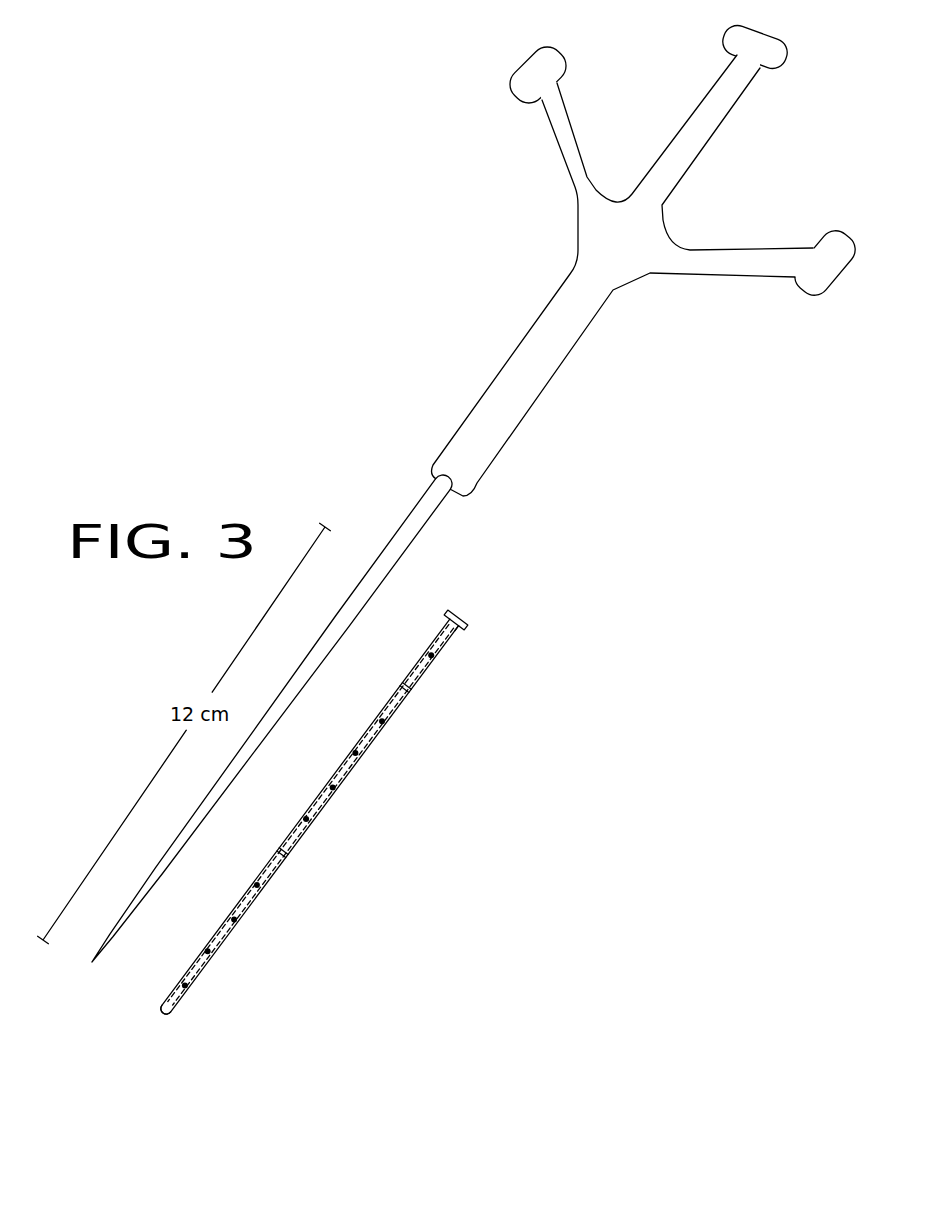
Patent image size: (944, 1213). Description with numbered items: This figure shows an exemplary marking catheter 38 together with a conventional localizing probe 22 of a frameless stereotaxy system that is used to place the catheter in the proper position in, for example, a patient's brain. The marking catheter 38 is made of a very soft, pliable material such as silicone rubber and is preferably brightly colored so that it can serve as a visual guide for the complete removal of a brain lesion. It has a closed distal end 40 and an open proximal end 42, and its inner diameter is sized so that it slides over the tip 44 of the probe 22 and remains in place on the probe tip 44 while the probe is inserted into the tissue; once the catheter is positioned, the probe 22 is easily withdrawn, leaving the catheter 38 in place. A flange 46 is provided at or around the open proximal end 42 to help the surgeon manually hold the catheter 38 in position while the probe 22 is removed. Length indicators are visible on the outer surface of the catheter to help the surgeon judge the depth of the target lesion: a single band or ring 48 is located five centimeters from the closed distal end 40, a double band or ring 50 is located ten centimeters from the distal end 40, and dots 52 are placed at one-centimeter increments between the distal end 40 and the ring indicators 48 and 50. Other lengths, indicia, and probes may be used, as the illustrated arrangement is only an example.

The localizing probe 22 is at (497, 390).
The probe tip 44 is at (322, 662).
The marking catheter 38 is at (358, 832).
The open proximal end 42 is at (465, 612).
The flange 46 is at (458, 634).
The double band or ring 50 is at (413, 688).
The single band or ring 48 is at (293, 848).
The dots 52 is at (248, 912).
The closed distal end 40 is at (163, 1022).